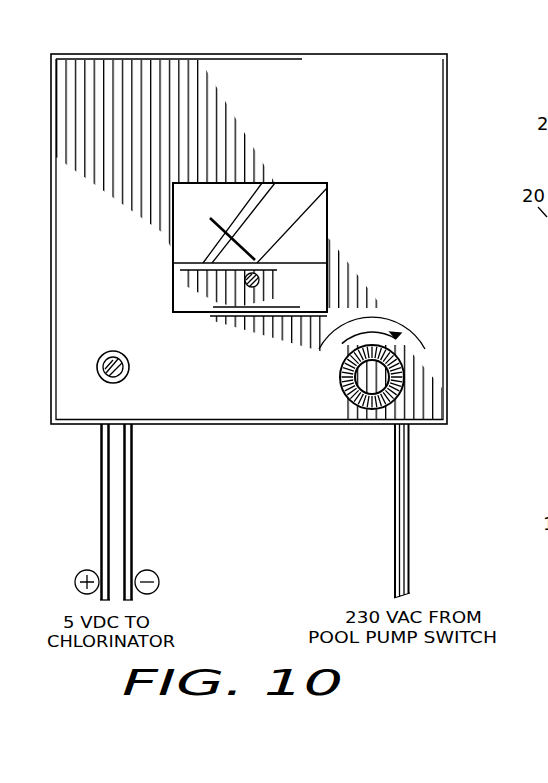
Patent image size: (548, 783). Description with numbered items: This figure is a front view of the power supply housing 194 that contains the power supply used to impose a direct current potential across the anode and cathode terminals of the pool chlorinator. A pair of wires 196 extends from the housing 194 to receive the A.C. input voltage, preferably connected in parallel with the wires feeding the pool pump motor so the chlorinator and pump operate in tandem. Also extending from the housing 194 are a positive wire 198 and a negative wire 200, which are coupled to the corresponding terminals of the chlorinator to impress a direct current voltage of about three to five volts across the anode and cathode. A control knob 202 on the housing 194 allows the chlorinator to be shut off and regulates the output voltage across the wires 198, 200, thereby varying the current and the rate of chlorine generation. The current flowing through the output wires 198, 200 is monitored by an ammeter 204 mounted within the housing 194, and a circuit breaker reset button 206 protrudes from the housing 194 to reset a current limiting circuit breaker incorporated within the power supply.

The power supply housing 194 is at (337, 60).
The wires 196 is at (410, 528).
The positive wire 198 is at (100, 543).
The negative wire 200 is at (133, 543).
The control knob 202 is at (342, 387).
The ammeter 204 is at (283, 183).
The circuit breaker reset button 206 is at (118, 350).